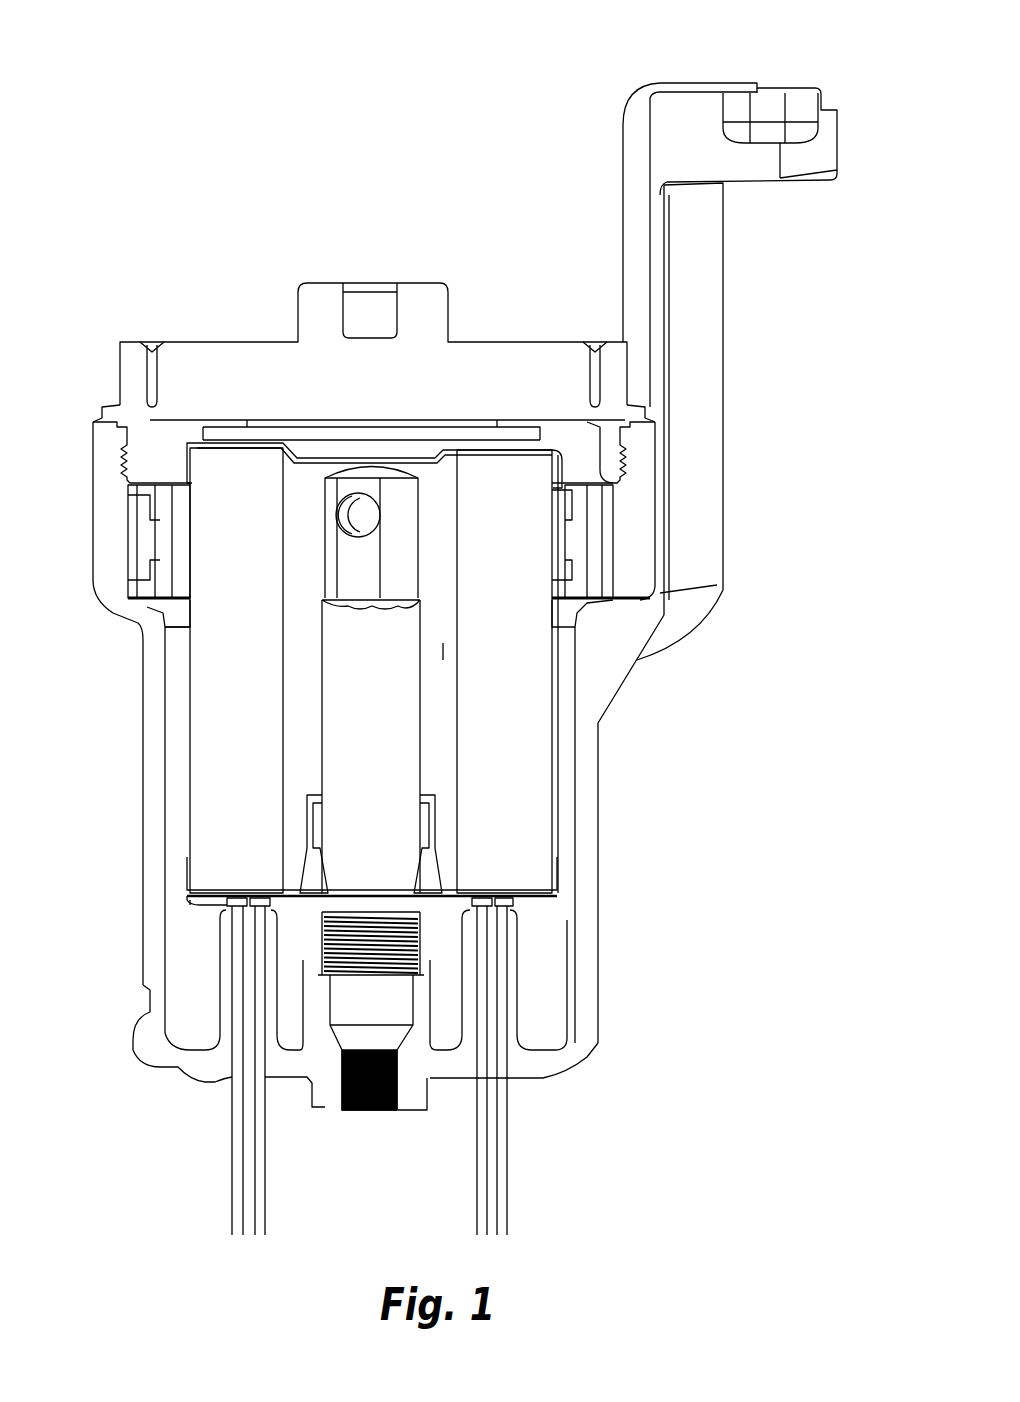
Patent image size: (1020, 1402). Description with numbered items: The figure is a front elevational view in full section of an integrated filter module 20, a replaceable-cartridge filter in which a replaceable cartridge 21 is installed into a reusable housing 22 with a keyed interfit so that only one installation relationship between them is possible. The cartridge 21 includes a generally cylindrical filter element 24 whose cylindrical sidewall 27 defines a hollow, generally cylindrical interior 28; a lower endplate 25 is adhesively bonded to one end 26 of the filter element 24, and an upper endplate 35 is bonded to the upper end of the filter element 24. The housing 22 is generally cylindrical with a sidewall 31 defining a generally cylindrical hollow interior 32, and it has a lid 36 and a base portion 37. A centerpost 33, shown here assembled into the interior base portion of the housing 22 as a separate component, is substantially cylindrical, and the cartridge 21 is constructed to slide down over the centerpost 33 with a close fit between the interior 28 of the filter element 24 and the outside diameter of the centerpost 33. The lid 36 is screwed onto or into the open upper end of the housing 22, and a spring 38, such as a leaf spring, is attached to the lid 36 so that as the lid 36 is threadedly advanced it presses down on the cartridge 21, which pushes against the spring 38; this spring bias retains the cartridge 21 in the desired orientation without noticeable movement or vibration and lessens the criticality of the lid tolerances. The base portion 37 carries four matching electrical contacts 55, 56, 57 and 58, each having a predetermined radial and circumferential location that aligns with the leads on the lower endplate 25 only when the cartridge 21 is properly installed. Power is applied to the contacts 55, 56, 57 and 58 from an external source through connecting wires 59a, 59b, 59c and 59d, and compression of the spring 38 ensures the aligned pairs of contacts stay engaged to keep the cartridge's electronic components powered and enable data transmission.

The integrated filter module 20 is at (797, 52).
The lid 36 is at (132, 363).
The spring 38 is at (380, 428).
The endplate 35 is at (487, 443).
The sidewall 31 is at (103, 578).
The hollow, generally cylindrical interior 28 is at (307, 558).
The cylindrical sidewall 27 is at (453, 640).
The generally cylindrical hollow interior 32 is at (563, 718).
The filter element 24 is at (223, 745).
The replaceable cartridge 21 is at (523, 773).
The reusable housing 22 is at (155, 800).
The centerpost 33 is at (407, 800).
The one end 26 is at (193, 878).
The endplate 25 is at (203, 900).
The electrical contact 58 is at (508, 910).
The base portion 37 is at (196, 960).
The electrical contact 56 is at (237, 908).
The electrical contact 55 is at (258, 910).
The electrical contact 57 is at (483, 910).
The connecting wire 59a is at (263, 1107).
The connecting wire 59b is at (237, 1147).
The connecting wire 59c is at (480, 1177).
The connecting wire 59d is at (507, 1105).